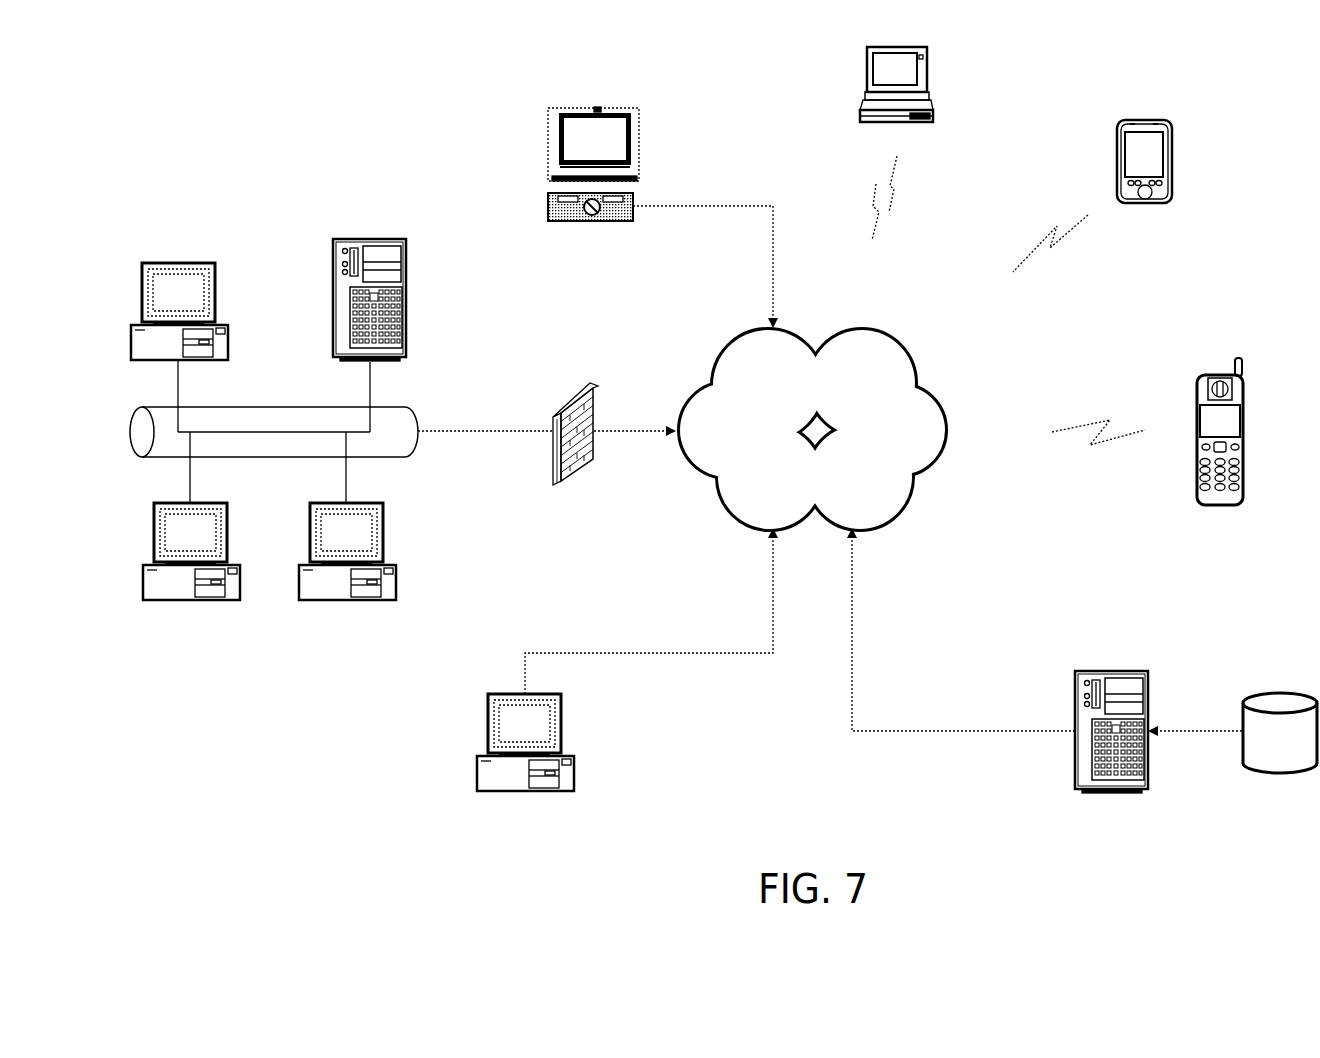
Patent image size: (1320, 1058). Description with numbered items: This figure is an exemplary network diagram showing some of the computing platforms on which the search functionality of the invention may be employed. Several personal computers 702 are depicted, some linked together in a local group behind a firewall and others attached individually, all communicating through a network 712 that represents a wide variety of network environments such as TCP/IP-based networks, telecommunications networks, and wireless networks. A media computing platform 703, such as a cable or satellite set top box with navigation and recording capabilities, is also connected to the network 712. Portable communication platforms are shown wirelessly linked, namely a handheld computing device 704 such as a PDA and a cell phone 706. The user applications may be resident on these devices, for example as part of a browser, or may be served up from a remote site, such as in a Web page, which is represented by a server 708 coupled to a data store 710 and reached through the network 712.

The personal computer 702 is at (507, 404).
The media computing platform 703 is at (566, 164).
The handheld computing device 704 is at (1117, 149).
The cell phone 706 is at (1191, 431).
The server 708 is at (1102, 698).
The data store 710 is at (1270, 701).
The network 712 is at (797, 422).